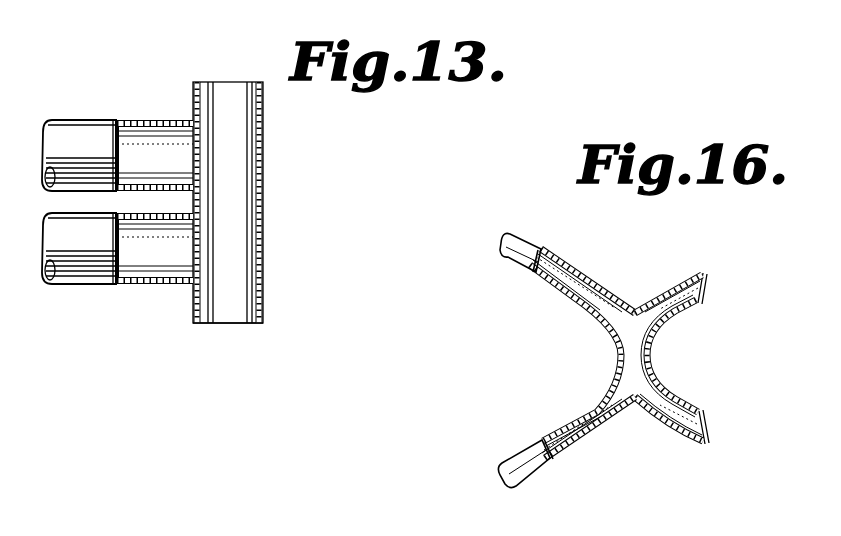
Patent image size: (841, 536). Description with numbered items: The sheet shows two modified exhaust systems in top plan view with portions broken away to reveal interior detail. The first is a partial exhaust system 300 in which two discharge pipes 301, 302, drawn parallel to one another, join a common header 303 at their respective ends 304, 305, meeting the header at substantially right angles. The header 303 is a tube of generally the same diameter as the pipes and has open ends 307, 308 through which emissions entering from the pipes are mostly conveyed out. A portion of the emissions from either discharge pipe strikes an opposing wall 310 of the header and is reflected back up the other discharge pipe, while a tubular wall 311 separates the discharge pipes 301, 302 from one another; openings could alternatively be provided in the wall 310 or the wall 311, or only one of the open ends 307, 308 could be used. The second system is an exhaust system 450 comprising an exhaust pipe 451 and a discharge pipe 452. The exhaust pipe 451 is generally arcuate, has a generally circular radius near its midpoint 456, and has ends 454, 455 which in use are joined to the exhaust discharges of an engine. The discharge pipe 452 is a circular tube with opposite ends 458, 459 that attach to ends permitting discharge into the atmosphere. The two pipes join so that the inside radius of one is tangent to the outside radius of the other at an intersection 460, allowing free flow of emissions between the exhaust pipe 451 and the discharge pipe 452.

In FIG. 13, the exhaust system 300 is at (130, 328).
In FIG. 13, the discharge pipe 301 is at (67, 120).
In FIG. 13, the discharge pipe 302 is at (90, 286).
In FIG. 13, the header 303 is at (263, 153).
In FIG. 13, the end 304 is at (193, 118).
In FIG. 13, the end 305 is at (193, 285).
In FIG. 13, the open end 307 is at (232, 90).
In FIG. 13, the open end 308 is at (263, 324).
In FIG. 13, the opposing wall 310 is at (256, 236).
In FIG. 13, the tubular wall 311 is at (197, 195).
In FIG. 16, the exhaust system 450 is at (636, 460).
In FIG. 16, the exhaust pipe 451 is at (583, 270).
In FIG. 16, the discharge pipe 452 is at (672, 285).
In FIG. 16, the end 454 is at (533, 242).
In FIG. 16, the end 455 is at (515, 454).
In FIG. 16, the midpoint 456 is at (623, 354).
In FIG. 16, the end 458 is at (694, 306).
In FIG. 16, the end 459 is at (702, 416).
In FIG. 16, the intersection 460 is at (652, 350).